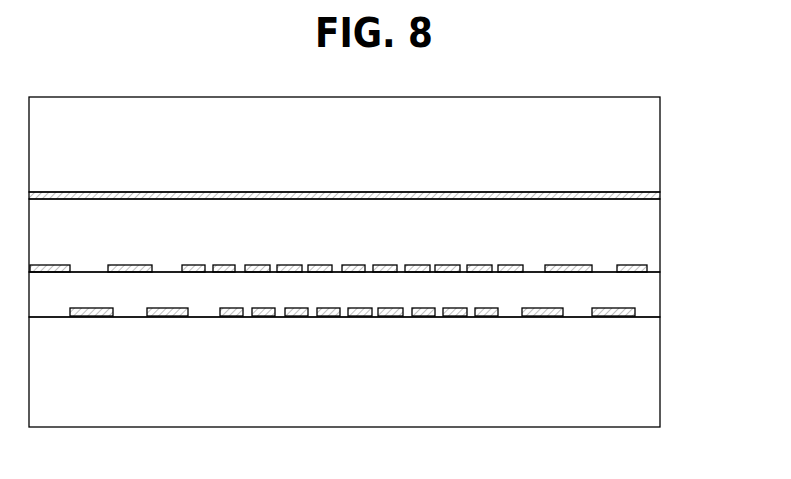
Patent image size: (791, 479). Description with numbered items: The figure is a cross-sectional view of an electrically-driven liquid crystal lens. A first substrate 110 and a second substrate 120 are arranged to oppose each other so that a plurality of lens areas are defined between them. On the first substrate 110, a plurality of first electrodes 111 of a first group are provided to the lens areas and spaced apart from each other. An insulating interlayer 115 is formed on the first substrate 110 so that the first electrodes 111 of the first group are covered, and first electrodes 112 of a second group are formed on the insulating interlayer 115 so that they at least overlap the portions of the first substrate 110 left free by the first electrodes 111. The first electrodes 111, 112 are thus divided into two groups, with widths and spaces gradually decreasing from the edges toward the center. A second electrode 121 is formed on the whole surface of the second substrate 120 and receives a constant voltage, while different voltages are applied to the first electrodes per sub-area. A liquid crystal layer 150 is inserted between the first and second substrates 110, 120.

The second substrate 120 is at (652, 141).
The second electrode 121 is at (656, 194).
The liquid crystal layer 150 is at (650, 232).
The first electrodes of a second group 112 is at (647, 267).
The insulating interlayer 115 is at (650, 292).
The first electrodes of a first group 111 is at (636, 311).
The first substrate 110 is at (650, 366).